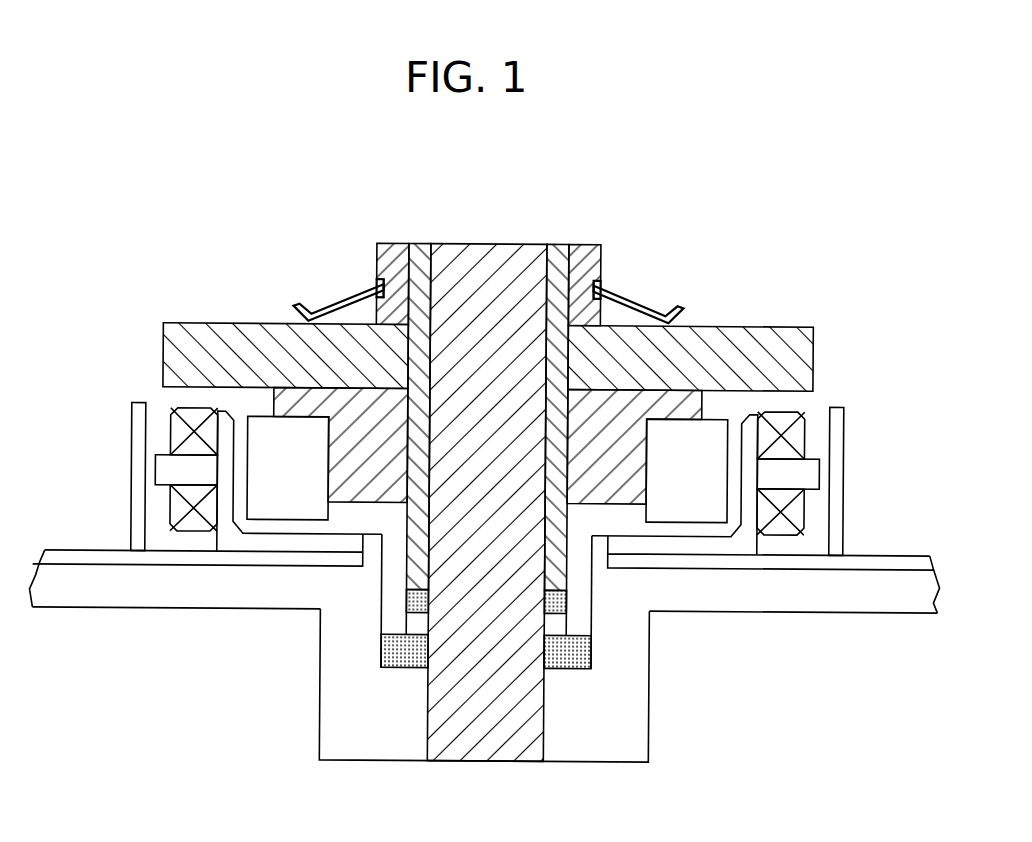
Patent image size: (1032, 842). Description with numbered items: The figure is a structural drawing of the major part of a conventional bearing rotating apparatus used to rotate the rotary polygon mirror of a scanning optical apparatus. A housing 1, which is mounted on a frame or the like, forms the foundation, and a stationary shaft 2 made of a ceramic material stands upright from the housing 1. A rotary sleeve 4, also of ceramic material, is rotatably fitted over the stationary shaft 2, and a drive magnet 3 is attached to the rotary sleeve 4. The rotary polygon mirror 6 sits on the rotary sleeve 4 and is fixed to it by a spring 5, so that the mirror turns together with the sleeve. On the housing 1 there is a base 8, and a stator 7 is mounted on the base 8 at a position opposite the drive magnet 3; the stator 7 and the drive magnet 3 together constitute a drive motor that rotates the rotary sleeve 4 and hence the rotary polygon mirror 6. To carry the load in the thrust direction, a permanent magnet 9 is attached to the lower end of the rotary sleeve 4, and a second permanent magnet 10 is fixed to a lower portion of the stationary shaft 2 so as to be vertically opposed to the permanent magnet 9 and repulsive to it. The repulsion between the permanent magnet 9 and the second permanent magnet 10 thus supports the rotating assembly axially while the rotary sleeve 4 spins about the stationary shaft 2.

The housing 1 is at (642, 705).
The stationary shaft 2 is at (485, 762).
The drive magnet 3 is at (263, 450).
The rotary sleeve 4 is at (418, 244).
The spring 5 is at (343, 300).
The rotary polygon mirror 6 is at (772, 338).
The stator 7 is at (815, 468).
The base 8 is at (884, 565).
The permanent magnet 9 is at (405, 601).
The second permanent magnet 10 is at (384, 652).